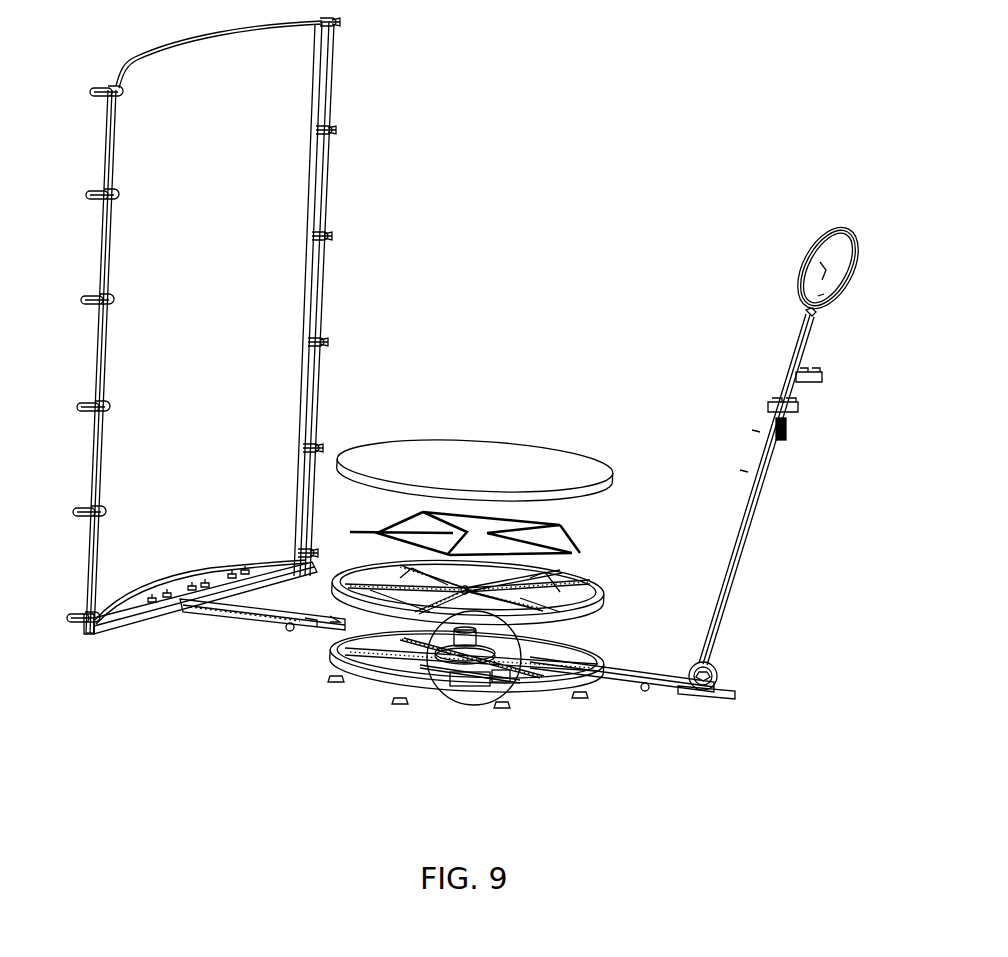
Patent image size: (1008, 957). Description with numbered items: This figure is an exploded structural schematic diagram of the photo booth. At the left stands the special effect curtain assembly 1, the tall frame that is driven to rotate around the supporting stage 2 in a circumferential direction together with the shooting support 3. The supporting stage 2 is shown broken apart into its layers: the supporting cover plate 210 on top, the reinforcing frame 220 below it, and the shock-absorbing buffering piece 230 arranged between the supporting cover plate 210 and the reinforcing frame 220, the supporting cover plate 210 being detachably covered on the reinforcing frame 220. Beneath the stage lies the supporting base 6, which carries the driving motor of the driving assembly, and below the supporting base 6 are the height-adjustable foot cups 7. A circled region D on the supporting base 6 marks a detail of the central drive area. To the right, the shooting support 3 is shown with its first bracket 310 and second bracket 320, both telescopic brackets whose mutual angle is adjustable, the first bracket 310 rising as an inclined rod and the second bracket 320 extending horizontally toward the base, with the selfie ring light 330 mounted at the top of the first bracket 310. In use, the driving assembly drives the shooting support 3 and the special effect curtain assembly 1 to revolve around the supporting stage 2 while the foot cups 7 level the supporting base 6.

The special effect curtain assembly 1 is at (278, 283).
The supporting stage 2 is at (702, 470).
The supporting cover plate 210 is at (613, 483).
The reinforcing frame 220 is at (605, 590).
The shock-absorbing buffering piece 230 is at (600, 541).
The shooting support 3 is at (781, 771).
The first bracket 310 is at (730, 620).
The second bracket 320 is at (648, 690).
The selfie ring light 330 is at (816, 270).
The supporting base 6 is at (363, 680).
The foot cups 7 is at (332, 683).
The detail region D is at (473, 706).